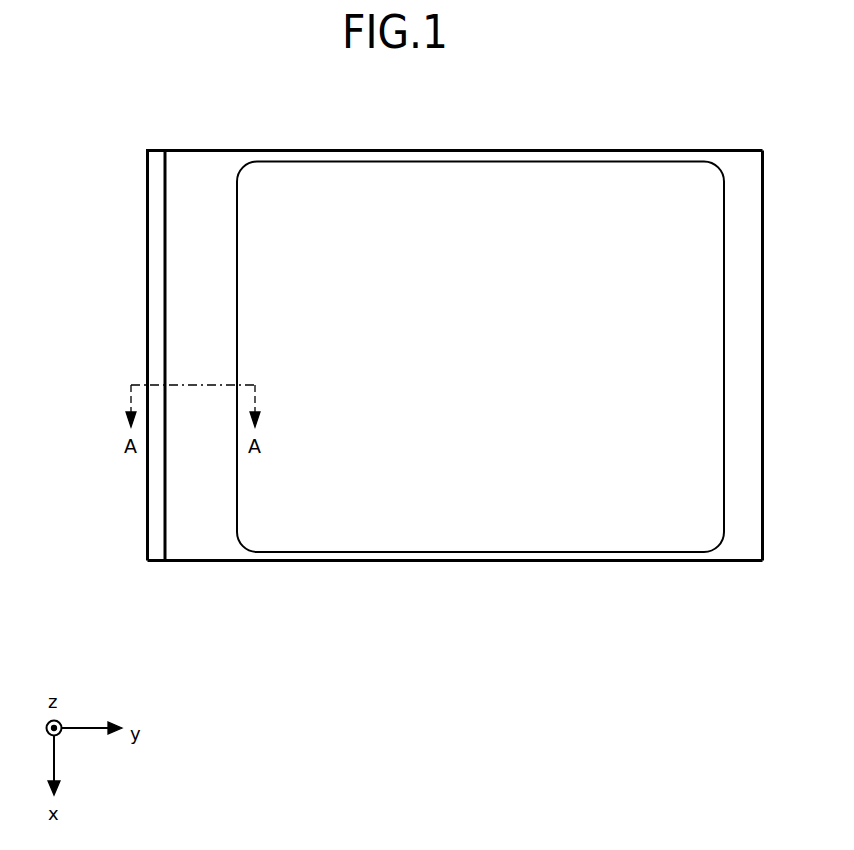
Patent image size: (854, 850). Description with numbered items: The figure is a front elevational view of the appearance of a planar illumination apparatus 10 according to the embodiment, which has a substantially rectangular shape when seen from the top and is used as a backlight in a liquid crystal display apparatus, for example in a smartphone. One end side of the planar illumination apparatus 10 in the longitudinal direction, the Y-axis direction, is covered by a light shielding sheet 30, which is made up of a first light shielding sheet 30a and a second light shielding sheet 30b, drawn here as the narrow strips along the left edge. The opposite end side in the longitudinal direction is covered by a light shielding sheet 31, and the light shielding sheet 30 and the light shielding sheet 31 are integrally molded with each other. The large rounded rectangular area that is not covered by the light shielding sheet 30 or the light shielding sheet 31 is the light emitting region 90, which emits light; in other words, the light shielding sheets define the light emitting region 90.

The planar illumination apparatus 10 is at (640, 127).
The light shielding sheet 30 is at (232, 612).
The first light shielding sheet 30a is at (157, 563).
The second light shielding sheet 30b is at (210, 548).
The light shielding sheet 31 is at (742, 549).
The light emitting region 90 is at (477, 228).